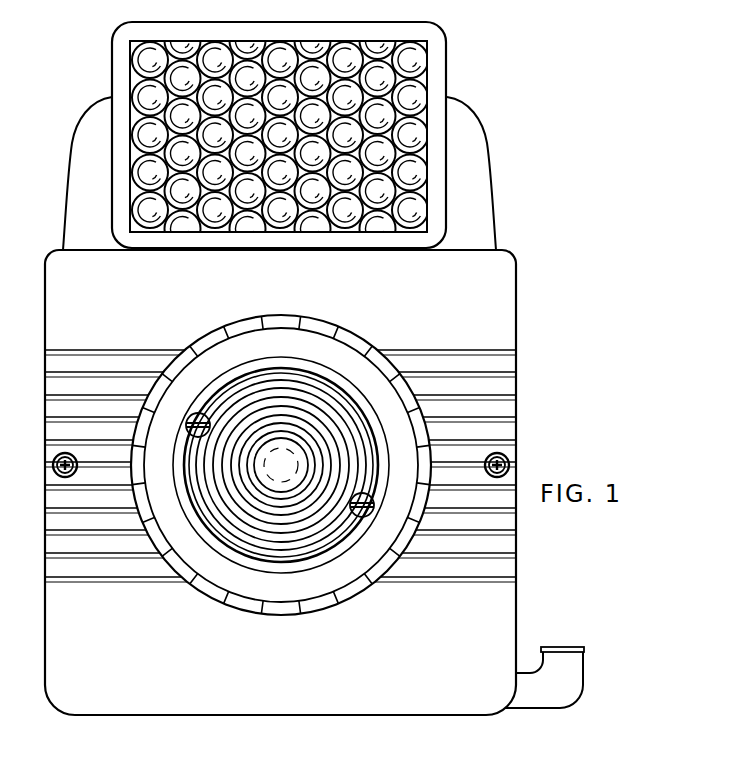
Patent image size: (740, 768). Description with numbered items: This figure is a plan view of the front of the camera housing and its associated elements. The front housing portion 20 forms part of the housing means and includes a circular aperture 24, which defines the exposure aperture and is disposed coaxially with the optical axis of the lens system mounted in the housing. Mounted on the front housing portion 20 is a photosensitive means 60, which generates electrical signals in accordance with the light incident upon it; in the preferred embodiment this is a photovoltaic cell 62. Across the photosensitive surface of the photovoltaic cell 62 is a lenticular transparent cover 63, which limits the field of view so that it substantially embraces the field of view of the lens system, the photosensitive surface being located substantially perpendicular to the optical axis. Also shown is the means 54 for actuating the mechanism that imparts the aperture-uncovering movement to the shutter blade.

The front housing portion 20 is at (500, 289).
The aperture 24 is at (302, 466).
The means for actuating said means for imparting an aperture-uncovering movement 54 is at (558, 660).
The photosensitive means 60 is at (447, 50).
The photovoltaic cell 62 is at (424, 113).
The lenticular transparent cover 63 is at (173, 110).